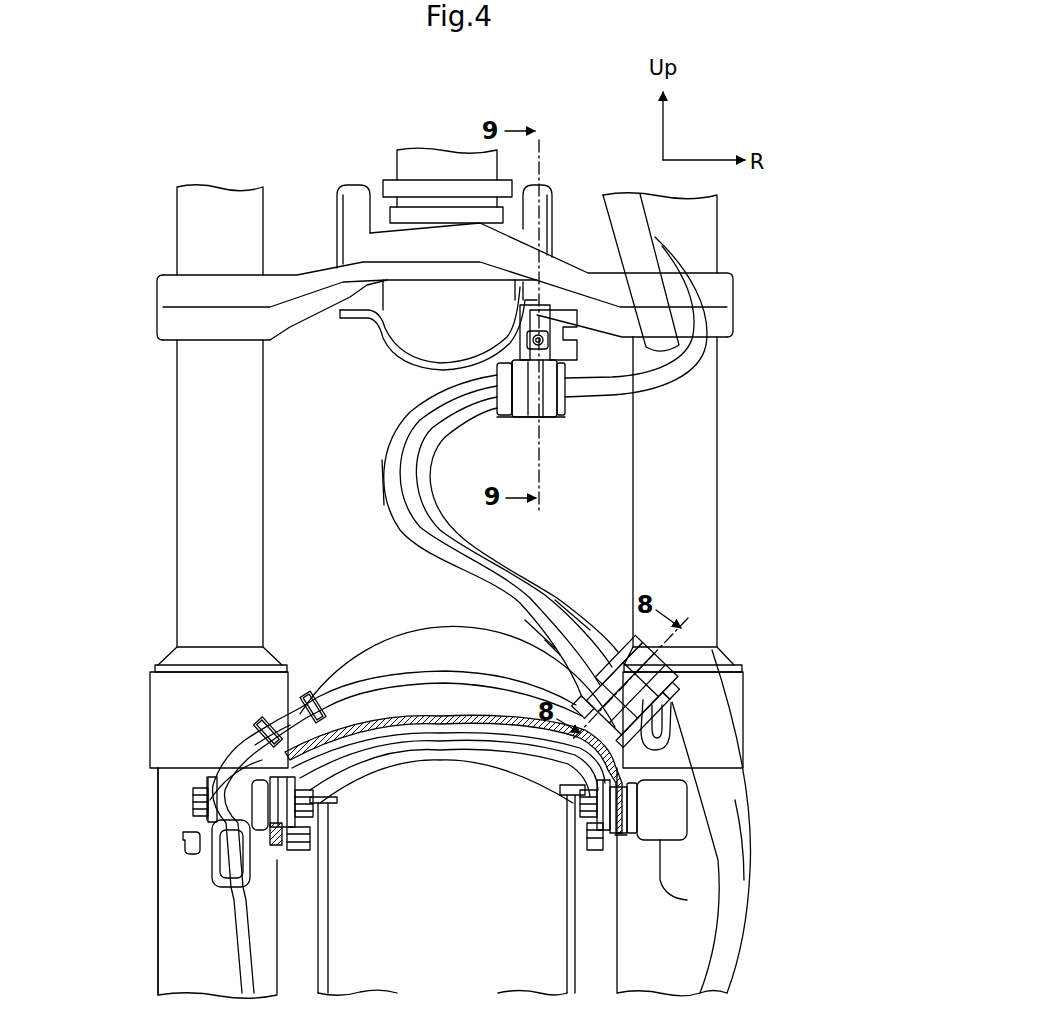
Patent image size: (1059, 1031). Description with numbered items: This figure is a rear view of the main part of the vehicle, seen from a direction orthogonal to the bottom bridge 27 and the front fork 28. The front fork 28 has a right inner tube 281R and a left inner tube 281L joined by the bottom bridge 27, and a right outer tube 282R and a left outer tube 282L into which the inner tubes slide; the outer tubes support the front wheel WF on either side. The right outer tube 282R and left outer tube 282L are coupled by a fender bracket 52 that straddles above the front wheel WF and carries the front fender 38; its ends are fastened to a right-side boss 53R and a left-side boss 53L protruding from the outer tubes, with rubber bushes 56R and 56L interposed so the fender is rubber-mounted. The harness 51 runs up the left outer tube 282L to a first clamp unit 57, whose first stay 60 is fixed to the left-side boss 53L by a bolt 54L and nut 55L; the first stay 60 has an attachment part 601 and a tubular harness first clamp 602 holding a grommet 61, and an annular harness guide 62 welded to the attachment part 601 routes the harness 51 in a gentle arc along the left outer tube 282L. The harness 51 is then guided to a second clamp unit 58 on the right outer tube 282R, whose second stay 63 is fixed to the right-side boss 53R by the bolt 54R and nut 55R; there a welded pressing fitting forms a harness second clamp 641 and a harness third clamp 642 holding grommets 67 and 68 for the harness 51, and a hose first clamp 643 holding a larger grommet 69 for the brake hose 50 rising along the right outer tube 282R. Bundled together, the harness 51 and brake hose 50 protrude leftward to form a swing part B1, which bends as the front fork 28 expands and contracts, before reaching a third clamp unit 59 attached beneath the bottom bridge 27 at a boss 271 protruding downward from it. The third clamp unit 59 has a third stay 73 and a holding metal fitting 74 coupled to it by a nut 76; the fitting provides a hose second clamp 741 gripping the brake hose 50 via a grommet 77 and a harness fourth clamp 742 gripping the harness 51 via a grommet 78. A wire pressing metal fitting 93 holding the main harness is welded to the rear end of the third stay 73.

The bottom bridge 27 is at (175, 322).
The front fork 28 is at (728, 624).
The front fender 38 is at (370, 653).
The brake hose 50 is at (740, 920).
The harness 51 is at (187, 933).
The fender bracket 52 is at (417, 732).
The left-side boss 53L is at (200, 787).
The right-side boss 53R is at (687, 900).
The bolt 54L is at (190, 815).
The bolt 54R is at (620, 805).
The nut 55L is at (312, 805).
The nut 55R is at (572, 800).
The rubber bush 56L is at (183, 845).
The rubber bush 56R is at (587, 812).
The first clamp unit 57 is at (297, 692).
The second clamp unit 58 is at (678, 700).
The third clamp unit 59 is at (555, 425).
The first clamp unit stay 60 is at (218, 765).
The grommet 61 is at (314, 690).
The harness guide 62 is at (233, 900).
The second clamp unit stay 63 is at (672, 745).
The grommet 67 is at (527, 643).
The grommet 68 is at (575, 650).
The grommet 69 is at (678, 682).
The third clamp unit stay 73 is at (560, 315).
The holding metal fitting 74 is at (516, 357).
The nut 76 is at (565, 348).
The grommet 77 is at (567, 410).
The grommet 78 is at (430, 413).
The pressing metal fitting 93 is at (385, 343).
The boss 271 is at (483, 223).
The left inner tube 281L is at (178, 452).
The right inner tube 281R is at (718, 498).
The left outer tube 282L is at (190, 933).
The right outer tube 282R is at (725, 735).
The attachment part 601 is at (182, 790).
The harness first clamp 602 is at (285, 713).
The harness second clamp 641 is at (535, 622).
The harness third clamp 642 is at (603, 660).
The hose first clamp 643 is at (628, 648).
The hose second clamp 741 is at (530, 417).
The harness fourth clamp 742 is at (505, 417).
The swing part B1 is at (374, 477).
The front wheel WF is at (577, 947).